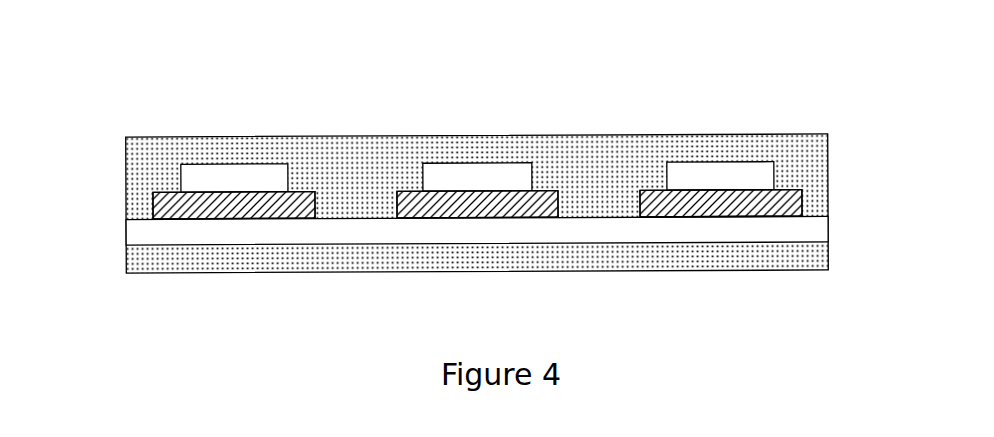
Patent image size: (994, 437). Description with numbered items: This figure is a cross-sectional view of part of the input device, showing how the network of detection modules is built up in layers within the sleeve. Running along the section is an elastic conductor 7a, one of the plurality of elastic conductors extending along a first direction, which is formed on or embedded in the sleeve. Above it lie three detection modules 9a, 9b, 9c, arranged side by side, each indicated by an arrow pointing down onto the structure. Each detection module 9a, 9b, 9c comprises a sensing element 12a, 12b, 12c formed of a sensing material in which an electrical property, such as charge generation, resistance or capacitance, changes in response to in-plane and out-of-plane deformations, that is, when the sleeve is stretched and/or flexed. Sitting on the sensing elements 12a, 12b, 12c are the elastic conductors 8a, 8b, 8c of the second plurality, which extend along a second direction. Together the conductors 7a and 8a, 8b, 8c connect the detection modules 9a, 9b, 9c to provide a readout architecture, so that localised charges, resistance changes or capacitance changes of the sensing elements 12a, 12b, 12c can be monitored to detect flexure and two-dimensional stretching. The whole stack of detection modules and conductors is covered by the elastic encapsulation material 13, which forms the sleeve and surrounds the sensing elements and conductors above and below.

The elastic conductor 7a is at (215, 228).
The elastic conductor 8a is at (208, 163).
The elastic conductor 8b is at (517, 163).
The elastic conductor 8c is at (758, 163).
The detection module 9a is at (234, 80).
The detection module 9b is at (478, 80).
The detection module 9c is at (733, 78).
The sensing element 12a is at (173, 203).
The sensing element 12b is at (545, 208).
The sensing element 12c is at (790, 189).
The elastic encapsulation material 13 is at (720, 257).